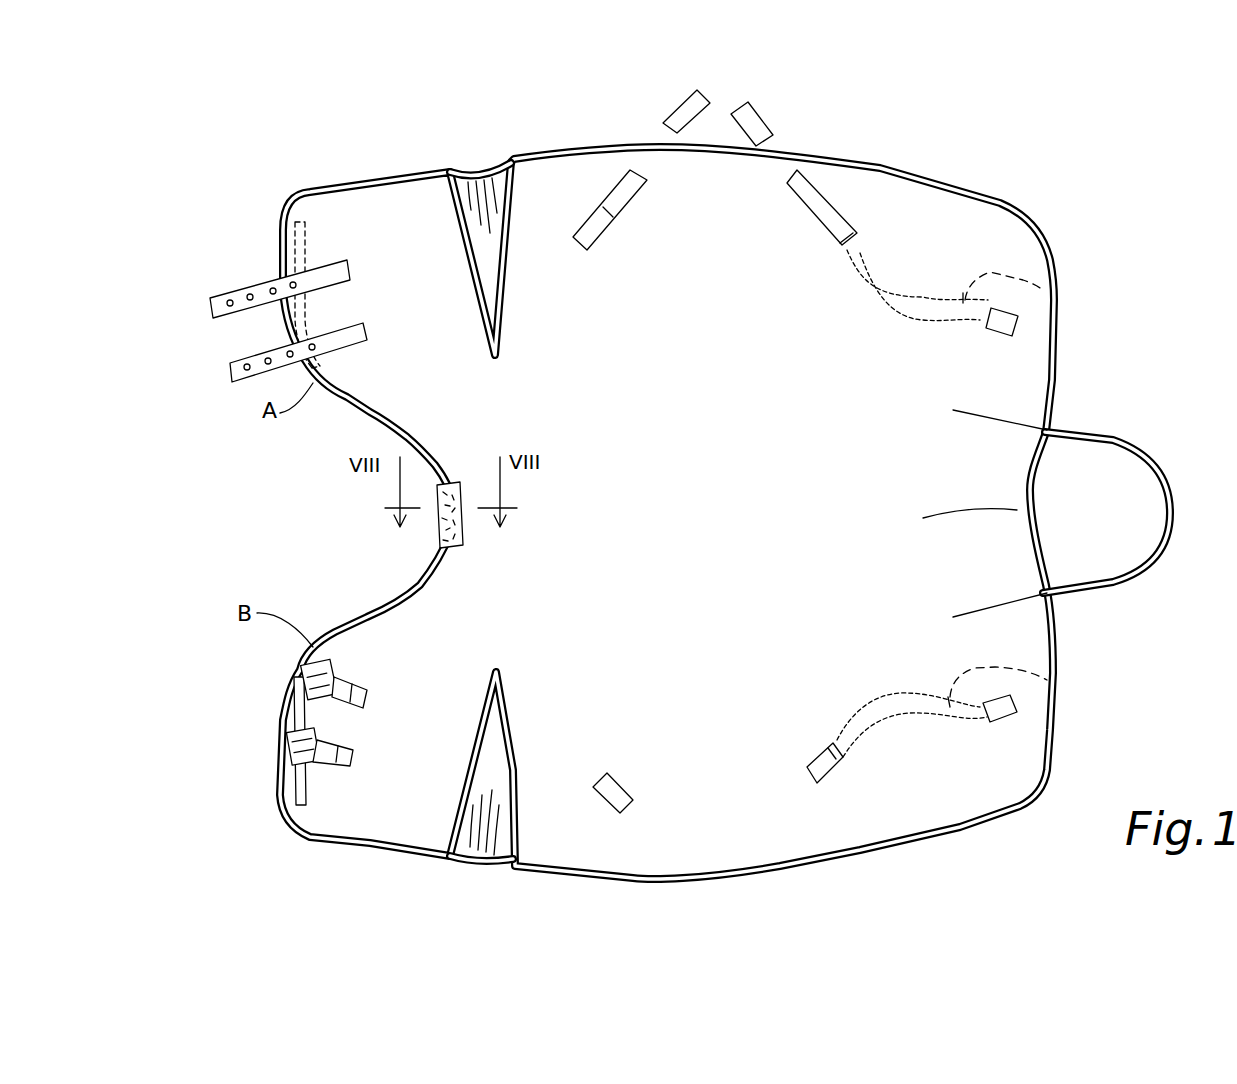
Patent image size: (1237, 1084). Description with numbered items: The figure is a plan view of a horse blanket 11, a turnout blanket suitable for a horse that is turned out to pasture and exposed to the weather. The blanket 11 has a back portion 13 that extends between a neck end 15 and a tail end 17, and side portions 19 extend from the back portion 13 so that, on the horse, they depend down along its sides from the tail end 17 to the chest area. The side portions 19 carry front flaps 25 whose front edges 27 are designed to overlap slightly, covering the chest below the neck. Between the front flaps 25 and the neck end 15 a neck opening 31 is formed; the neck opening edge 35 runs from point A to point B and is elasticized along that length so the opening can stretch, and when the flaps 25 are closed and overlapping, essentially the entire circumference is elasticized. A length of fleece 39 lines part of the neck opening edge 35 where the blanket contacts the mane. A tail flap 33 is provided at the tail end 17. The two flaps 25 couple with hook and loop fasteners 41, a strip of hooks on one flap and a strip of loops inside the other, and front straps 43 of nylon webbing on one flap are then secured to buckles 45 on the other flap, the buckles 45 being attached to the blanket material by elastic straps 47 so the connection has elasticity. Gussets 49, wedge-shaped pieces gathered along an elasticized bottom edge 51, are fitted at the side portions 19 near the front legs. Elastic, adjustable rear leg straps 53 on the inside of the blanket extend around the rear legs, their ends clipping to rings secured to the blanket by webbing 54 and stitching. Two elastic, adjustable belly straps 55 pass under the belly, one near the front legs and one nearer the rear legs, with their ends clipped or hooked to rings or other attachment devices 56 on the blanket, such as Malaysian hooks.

The horse blanket 11 is at (970, 190).
The back portion 13 is at (802, 533).
The neck end 15 is at (480, 543).
The tail end 17 is at (1027, 497).
The side portions 19 is at (762, 280).
The front flaps 25 is at (338, 210).
The front edges 27 is at (278, 261).
The neck opening 31 is at (326, 510).
The tail flap 33 is at (1123, 480).
The neck opening edge 35 is at (363, 413).
The fleece 39 is at (433, 517).
The hook and loop fasteners 41 is at (300, 313).
The front straps 43 is at (222, 378).
The buckles 45 is at (287, 737).
The elastic straps 47 is at (337, 680).
The gussets 49 is at (503, 193).
The bottom edge 51 is at (475, 173).
The rear leg straps 53 is at (1062, 290).
The webbing 54 is at (1010, 727).
The belly straps 55 is at (680, 113).
The attachment devices 56 is at (807, 768).